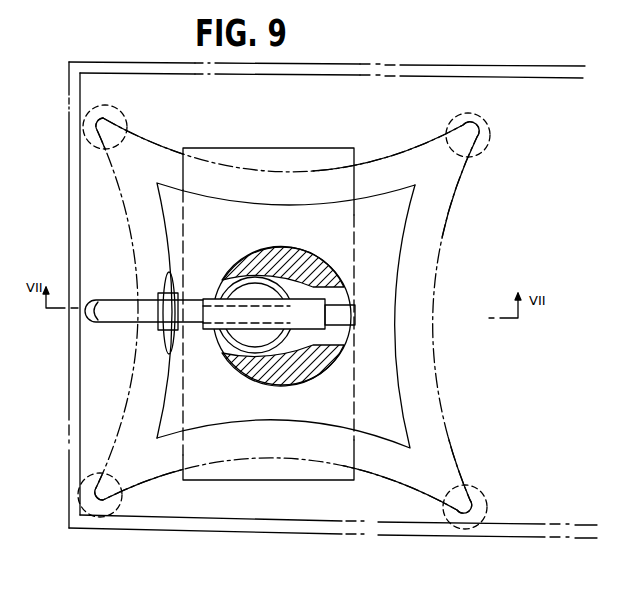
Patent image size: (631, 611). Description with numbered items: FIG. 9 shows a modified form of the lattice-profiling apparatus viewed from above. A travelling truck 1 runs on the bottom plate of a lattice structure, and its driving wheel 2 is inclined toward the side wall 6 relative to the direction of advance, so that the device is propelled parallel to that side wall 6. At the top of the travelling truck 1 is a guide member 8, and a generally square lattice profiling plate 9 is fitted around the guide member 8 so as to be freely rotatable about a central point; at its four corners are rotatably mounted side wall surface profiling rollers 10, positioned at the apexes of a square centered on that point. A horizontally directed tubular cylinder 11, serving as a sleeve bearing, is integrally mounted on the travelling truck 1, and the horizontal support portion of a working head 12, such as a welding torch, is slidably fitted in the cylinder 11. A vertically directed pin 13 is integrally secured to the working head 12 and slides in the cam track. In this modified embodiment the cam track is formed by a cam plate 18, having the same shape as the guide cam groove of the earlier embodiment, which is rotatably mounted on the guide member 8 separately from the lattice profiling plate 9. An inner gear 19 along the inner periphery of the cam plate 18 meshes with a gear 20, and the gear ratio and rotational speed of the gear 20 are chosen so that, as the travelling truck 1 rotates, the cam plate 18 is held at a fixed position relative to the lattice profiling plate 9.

The travelling truck 1 is at (299, 472).
The driving wheel 2 is at (150, 362).
The side wall 6 is at (69, 462).
The guide member 8 is at (333, 265).
The lattice profiling plate 9 is at (437, 200).
The side wall surface profiling roller 10 is at (488, 127).
The tubular cylinder 11 is at (350, 298).
The working head 12 is at (87, 323).
The pin 13 is at (160, 310).
The cam plate 18 is at (380, 383).
The inner gear 19 is at (224, 282).
The gear 20 is at (238, 348).